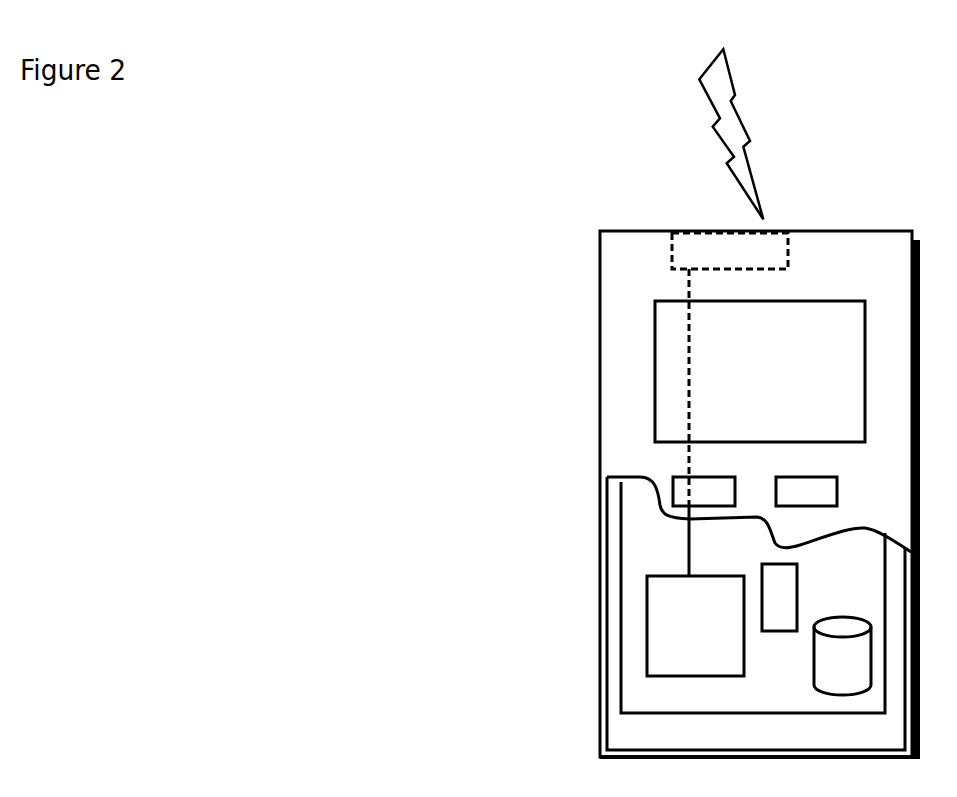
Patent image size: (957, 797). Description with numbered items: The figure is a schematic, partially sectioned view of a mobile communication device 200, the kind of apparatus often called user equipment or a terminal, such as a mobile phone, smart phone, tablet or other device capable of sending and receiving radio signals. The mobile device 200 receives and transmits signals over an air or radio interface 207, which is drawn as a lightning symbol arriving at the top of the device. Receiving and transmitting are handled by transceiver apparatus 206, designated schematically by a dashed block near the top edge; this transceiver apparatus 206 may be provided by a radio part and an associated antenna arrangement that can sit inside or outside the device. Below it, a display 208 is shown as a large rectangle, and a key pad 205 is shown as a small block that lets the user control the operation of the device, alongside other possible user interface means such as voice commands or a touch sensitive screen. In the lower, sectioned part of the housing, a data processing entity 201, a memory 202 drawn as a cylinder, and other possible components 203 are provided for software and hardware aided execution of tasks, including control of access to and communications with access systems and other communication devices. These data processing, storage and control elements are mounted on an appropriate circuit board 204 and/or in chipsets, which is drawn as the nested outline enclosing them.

The communication device 200 is at (602, 274).
The data processing entity 201 is at (653, 608).
The memory 202 is at (837, 668).
The other possible components 203 is at (778, 582).
The circuit board 204 is at (647, 695).
The key pad 205 is at (678, 492).
The transceiver apparatus 206 is at (777, 246).
The air or radio interface 207 is at (766, 157).
The display 208 is at (671, 357).